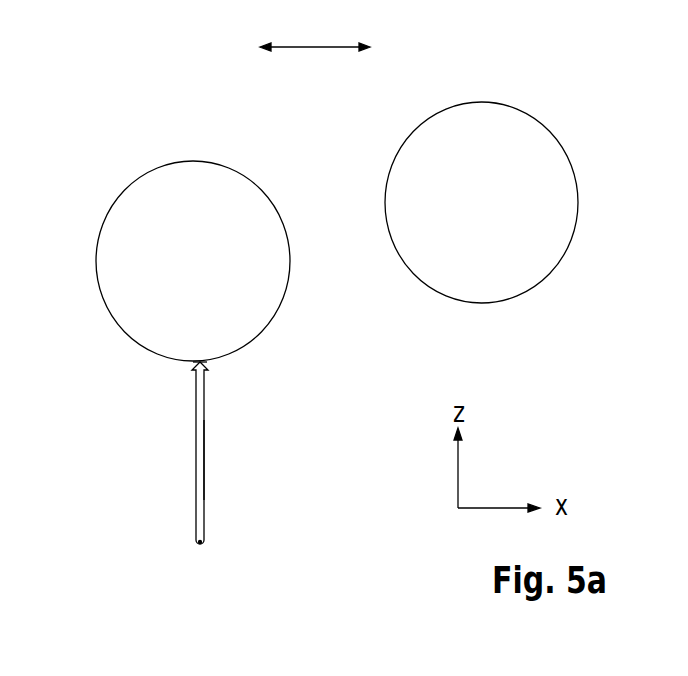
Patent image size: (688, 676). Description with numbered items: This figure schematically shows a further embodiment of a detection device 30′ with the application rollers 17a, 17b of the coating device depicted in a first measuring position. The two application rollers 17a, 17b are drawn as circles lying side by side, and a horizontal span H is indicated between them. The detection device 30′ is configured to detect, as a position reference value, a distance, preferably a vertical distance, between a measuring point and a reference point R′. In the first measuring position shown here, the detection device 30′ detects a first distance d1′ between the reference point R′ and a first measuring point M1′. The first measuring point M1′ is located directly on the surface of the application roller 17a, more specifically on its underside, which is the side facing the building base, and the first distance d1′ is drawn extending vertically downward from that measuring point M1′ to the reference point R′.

The application roller 17a is at (158, 192).
The application roller 17b is at (513, 132).
The first measuring point M1′ is at (208, 365).
The first distance d1′ is at (205, 458).
The reference point R′ is at (215, 463).
The detection device 30′ is at (167, 440).
The horizontal spacing H is at (315, 25).